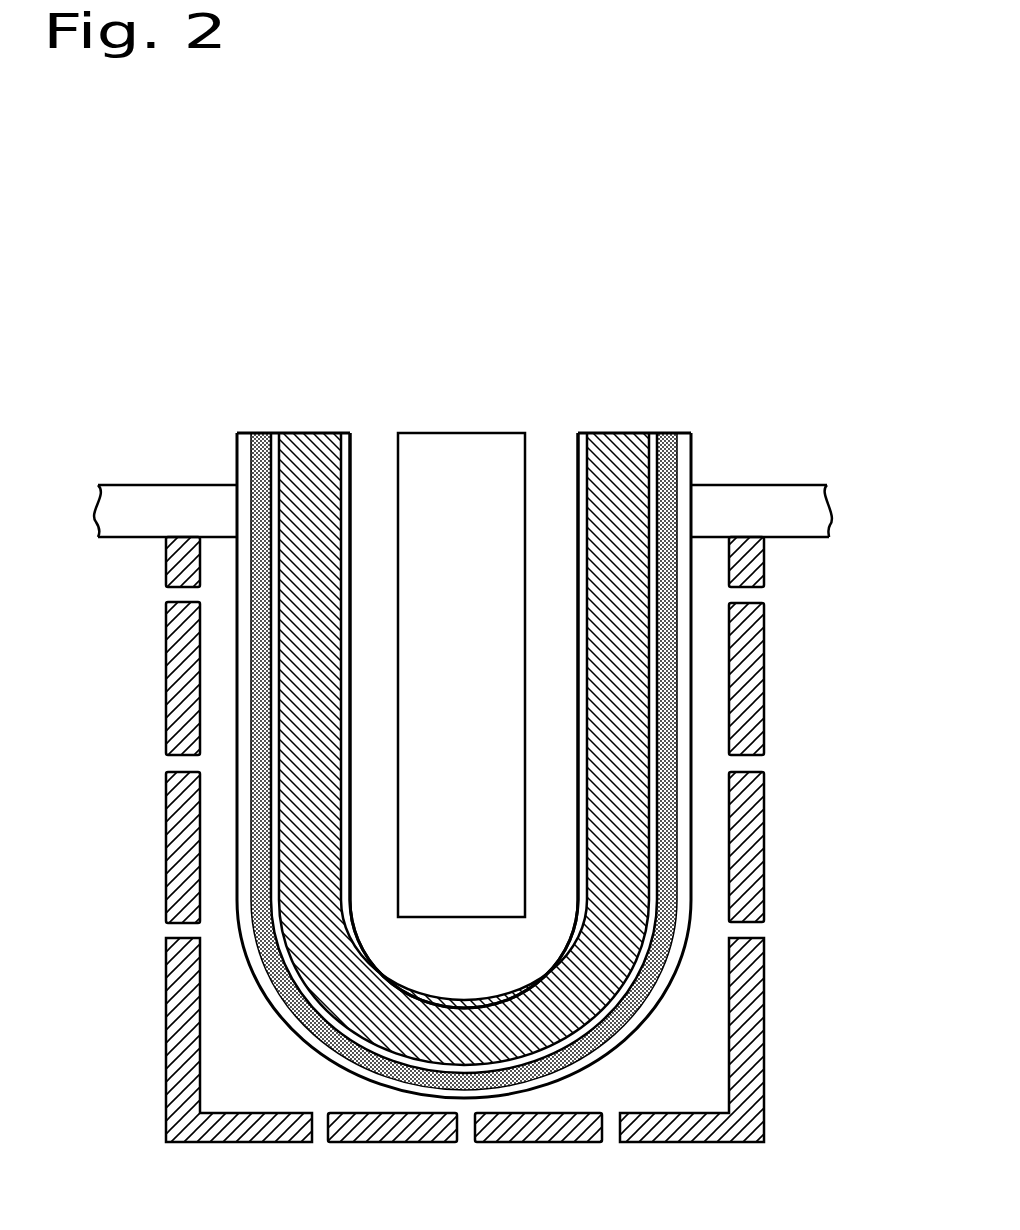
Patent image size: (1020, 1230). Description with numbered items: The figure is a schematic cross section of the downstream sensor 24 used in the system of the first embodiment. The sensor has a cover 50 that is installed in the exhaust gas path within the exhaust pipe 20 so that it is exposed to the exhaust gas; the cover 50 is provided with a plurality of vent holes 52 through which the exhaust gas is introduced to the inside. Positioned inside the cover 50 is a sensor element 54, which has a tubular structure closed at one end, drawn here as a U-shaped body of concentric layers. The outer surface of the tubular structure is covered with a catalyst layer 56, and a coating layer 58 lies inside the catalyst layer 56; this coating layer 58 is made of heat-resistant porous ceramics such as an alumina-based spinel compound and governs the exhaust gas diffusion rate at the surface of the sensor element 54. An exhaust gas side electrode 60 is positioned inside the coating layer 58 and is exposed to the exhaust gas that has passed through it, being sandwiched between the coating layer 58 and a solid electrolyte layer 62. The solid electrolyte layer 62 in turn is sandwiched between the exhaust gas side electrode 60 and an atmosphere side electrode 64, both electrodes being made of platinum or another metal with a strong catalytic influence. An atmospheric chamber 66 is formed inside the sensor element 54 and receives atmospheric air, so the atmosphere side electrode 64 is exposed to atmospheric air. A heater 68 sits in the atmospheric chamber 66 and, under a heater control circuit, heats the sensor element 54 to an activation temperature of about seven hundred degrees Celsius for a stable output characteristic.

The exhaust pipe 20 is at (787, 493).
The downstream sensor 24 is at (538, 839).
The cover 50 is at (758, 1028).
The vent holes 52 is at (752, 763).
The sensor element 54 is at (512, 811).
The catalyst layer 56 is at (690, 449).
The coating layer 58 is at (668, 433).
The exhaust gas side electrode 60 is at (648, 433).
The solid electrolyte layer 62 is at (610, 433).
The atmosphere side electrode 64 is at (583, 435).
The atmospheric chamber 66 is at (378, 453).
The heater 68 is at (452, 453).